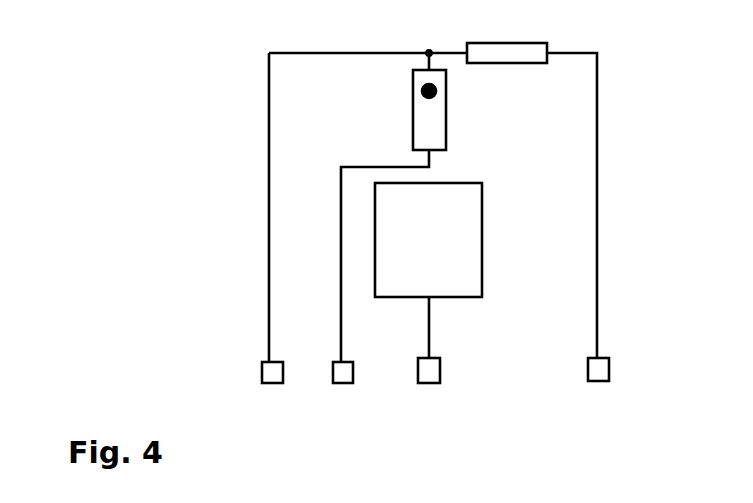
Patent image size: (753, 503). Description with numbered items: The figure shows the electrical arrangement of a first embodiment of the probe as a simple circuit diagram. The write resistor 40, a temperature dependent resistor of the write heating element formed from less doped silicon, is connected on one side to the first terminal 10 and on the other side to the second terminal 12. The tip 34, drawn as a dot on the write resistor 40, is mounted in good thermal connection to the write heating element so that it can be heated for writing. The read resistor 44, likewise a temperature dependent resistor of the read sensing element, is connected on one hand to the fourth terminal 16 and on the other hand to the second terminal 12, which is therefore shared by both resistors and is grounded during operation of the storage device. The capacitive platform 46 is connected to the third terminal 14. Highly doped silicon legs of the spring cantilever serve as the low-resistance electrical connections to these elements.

The first terminal 10 is at (339, 384).
The second terminal 12 is at (269, 384).
The third terminal 14 is at (425, 384).
The fourth terminal 16 is at (595, 382).
The tip 34 is at (421, 91).
The write resistor 40 is at (447, 118).
The read resistor 44 is at (550, 45).
The capacitive platform 46 is at (467, 219).